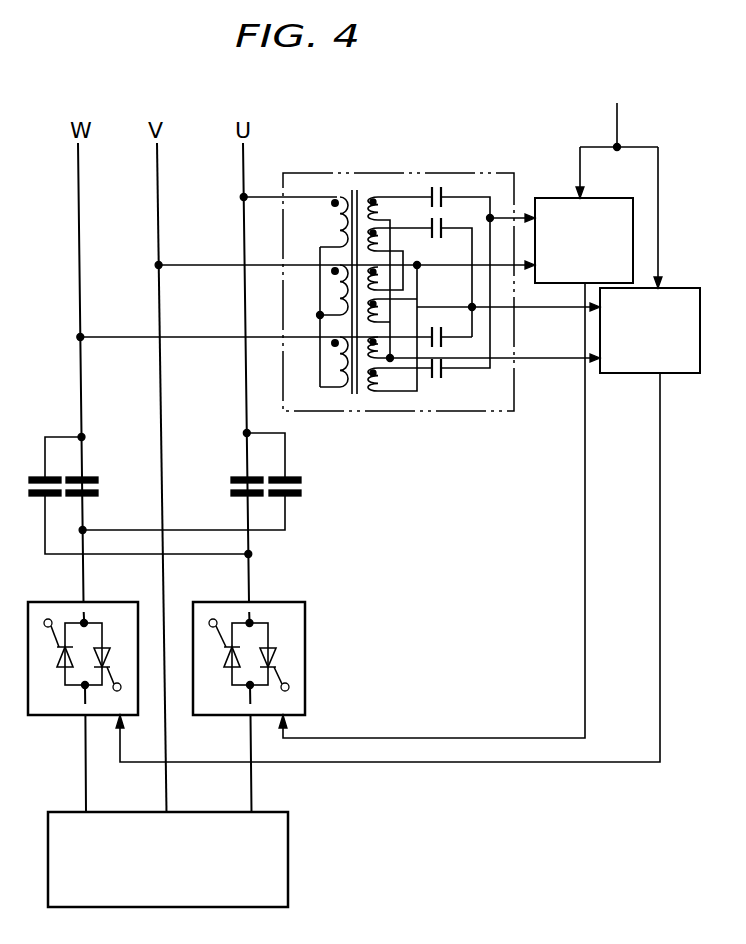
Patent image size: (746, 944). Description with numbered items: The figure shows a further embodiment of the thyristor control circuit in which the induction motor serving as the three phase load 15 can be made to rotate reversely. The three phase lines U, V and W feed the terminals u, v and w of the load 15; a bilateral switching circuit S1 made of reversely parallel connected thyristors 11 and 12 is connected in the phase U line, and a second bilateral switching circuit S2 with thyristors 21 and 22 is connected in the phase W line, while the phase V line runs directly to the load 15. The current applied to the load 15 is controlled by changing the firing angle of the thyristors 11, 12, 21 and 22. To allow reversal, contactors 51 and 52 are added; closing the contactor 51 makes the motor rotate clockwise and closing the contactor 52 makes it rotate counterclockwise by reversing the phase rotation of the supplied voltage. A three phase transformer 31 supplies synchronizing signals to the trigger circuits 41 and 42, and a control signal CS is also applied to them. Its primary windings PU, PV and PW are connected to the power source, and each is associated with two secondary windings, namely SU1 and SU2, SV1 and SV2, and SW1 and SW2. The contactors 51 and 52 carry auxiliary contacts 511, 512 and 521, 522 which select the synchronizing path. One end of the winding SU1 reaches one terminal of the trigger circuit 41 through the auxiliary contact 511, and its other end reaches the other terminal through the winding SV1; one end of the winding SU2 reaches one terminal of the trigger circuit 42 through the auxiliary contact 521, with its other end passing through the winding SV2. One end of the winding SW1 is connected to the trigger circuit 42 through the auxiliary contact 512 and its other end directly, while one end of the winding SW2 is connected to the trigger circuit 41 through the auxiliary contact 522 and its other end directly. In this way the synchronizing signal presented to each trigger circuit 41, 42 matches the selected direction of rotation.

The three phase transformer 31 is at (298, 173).
The auxiliary contact 511 is at (430, 189).
The auxiliary contact 521 is at (443, 224).
The auxiliary contact 512 is at (443, 340).
The auxiliary contact 522 is at (443, 371).
The trigger circuit 41 is at (547, 198).
The trigger circuit 42 is at (612, 373).
The contactor 51 is at (95, 477).
The contactor 52 is at (38, 477).
The bilateral switching circuit S1 is at (227, 602).
The bilateral switching circuit S2 is at (97, 602).
The thyristor 11 is at (278, 658).
The thyristor 12 is at (226, 664).
The thyristor 21 is at (110, 660).
The thyristor 22 is at (60, 664).
The three phase load 15 is at (290, 867).
The control signal CS is at (619, 181).
The primary winding PU is at (340, 224).
The primary winding PV is at (342, 293).
The primary winding PW is at (350, 364).
The secondary winding SU1 is at (380, 208).
The secondary winding SU2 is at (380, 238).
The secondary winding SV1 is at (380, 287).
The secondary winding SV2 is at (380, 317).
The secondary winding SW1 is at (377, 362).
The secondary winding SW2 is at (368, 388).